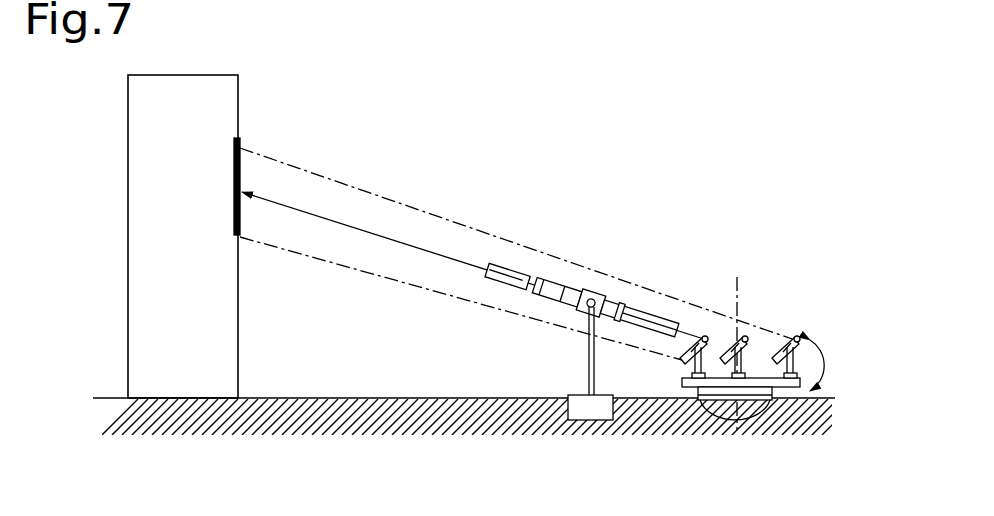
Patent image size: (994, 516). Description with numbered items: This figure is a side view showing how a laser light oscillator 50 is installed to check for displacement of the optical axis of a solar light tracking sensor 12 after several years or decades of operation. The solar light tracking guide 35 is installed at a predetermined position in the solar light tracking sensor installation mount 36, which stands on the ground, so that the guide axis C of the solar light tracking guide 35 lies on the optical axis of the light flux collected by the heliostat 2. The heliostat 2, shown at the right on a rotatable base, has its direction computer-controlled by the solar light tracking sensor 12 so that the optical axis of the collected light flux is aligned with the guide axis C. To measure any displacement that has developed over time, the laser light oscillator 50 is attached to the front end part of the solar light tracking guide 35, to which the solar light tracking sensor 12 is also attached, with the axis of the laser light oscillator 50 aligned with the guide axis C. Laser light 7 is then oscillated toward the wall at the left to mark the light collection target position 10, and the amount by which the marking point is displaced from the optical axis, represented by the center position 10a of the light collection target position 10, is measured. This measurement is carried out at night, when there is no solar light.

The heliostat 2 is at (784, 397).
The laser light 7 is at (361, 228).
The light collection target position 10 is at (243, 150).
The center position of the light collection target position 10a is at (243, 204).
The solar light tracking sensor 12 is at (655, 308).
The solar light tracking guide 35 is at (556, 297).
The solar light tracking sensor installation mount 36 is at (588, 367).
The laser light oscillator 50 is at (503, 262).
The guide axis C is at (588, 292).